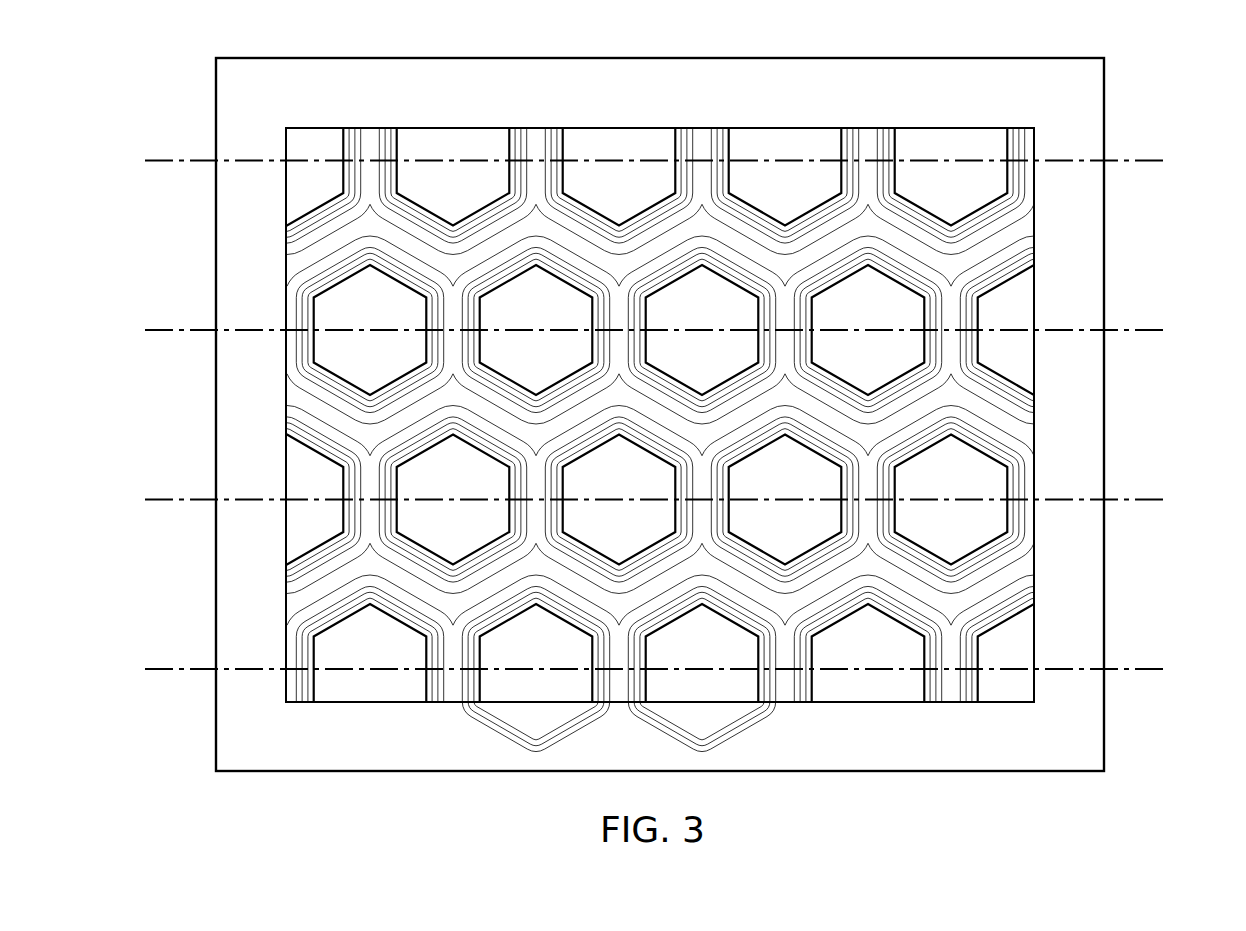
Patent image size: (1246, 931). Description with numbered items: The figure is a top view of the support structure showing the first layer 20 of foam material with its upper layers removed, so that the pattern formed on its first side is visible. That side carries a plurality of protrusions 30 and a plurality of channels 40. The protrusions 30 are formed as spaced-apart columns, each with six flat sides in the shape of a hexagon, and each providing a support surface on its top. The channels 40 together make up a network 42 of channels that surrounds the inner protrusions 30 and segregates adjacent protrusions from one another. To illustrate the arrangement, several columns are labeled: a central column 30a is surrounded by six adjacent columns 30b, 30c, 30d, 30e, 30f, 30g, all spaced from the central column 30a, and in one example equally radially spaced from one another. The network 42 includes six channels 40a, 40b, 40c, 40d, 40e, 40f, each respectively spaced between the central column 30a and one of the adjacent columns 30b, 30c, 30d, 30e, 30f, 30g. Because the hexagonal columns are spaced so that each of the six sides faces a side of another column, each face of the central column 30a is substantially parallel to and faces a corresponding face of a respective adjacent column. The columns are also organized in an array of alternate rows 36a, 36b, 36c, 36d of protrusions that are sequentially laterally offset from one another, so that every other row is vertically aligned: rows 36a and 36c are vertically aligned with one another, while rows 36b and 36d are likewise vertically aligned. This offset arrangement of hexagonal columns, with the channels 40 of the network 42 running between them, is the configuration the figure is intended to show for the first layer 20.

The first layer 20 is at (1150, 75).
The network of channels 42 is at (867, 130).
The row of protrusions 36a is at (159, 159).
The row of protrusions 36b is at (159, 329).
The row of protrusions 36c is at (159, 498).
The row of protrusions 36d is at (159, 668).
The protrusions 30 is at (512, 292).
The central column 30a is at (643, 535).
The adjacent column 30b is at (725, 317).
The adjacent column 30c is at (812, 535).
The adjacent column 30d is at (727, 684).
The adjacent column 30e is at (558, 683).
The adjacent column 30f is at (481, 535).
The adjacent column 30g is at (564, 322).
The channels 40 is at (580, 243).
The channel 40a is at (657, 413).
The channel 40b is at (705, 483).
The channel 40c is at (665, 583).
The channel 40d is at (575, 583).
The channel 40e is at (533, 483).
The channel 40f is at (565, 420).